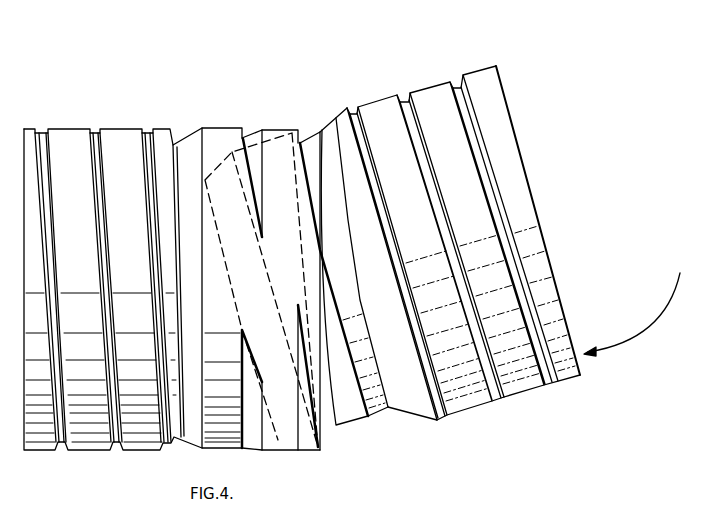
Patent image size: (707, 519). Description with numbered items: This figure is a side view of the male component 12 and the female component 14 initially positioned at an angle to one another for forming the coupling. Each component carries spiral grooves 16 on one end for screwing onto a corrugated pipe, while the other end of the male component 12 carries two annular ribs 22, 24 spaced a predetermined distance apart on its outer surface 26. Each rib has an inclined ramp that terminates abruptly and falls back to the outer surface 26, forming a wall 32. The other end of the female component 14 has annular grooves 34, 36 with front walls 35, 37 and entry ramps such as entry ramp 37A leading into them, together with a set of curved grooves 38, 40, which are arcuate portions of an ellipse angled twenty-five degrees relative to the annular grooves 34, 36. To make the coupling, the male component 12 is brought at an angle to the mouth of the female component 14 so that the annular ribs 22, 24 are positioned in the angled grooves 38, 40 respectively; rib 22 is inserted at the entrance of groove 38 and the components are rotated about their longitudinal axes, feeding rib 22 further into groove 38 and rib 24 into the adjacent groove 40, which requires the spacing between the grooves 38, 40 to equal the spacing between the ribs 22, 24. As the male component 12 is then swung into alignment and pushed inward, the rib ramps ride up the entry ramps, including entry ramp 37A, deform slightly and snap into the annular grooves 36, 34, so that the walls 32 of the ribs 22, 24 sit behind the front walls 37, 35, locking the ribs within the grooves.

The male component 12 is at (365, 104).
The female component 14 is at (86, 129).
The spiral grooves 16 is at (72, 136).
The annular rib 22 is at (290, 450).
The annular rib 24 is at (352, 426).
The outer surface 26 is at (380, 410).
The wall 32 is at (372, 421).
The annular groove 34 is at (270, 130).
The front wall 35 is at (304, 135).
The annular groove 36 is at (220, 128).
The front wall 37 is at (245, 137).
The entry ramp 37A is at (254, 449).
The curved groove 38 is at (257, 386).
The curved groove 40 is at (304, 252).